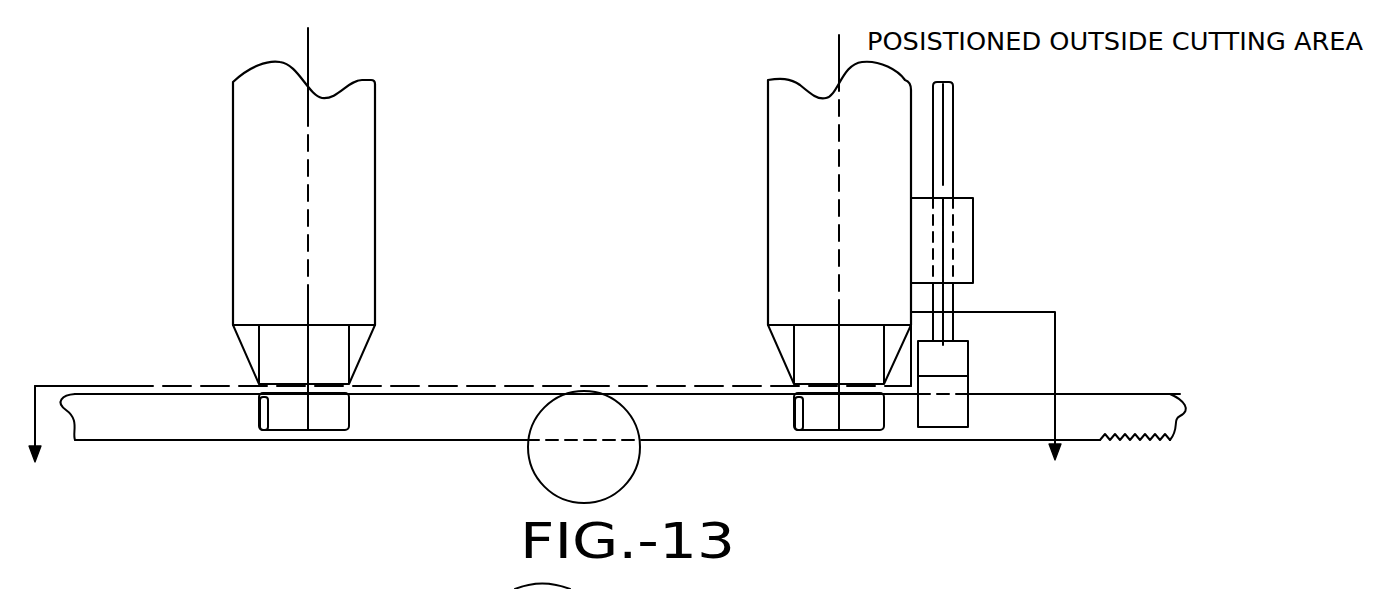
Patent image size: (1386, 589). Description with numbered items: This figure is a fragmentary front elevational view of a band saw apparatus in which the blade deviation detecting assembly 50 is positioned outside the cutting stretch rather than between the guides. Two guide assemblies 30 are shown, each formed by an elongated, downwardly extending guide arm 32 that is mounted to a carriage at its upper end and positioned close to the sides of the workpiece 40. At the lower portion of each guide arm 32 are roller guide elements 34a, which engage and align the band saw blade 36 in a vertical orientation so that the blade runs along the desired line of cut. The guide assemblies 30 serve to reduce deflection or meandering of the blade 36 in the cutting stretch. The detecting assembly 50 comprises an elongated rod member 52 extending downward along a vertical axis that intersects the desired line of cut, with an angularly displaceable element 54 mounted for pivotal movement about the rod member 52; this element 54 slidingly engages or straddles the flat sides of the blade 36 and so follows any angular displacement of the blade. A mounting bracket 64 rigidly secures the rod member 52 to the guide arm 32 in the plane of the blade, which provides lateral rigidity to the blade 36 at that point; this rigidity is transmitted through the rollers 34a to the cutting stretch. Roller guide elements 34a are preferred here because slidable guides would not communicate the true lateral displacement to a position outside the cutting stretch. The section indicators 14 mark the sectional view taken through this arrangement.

The section line 14- 14 is at (546, 401).
The guide assembly 30 is at (528, 229).
The guide arm 32 is at (233, 200).
The roller guide element 34a is at (283, 418).
The band saw blade 36 is at (397, 440).
The workpiece 40 is at (535, 472).
The blade deviation detection assembly 50 is at (1016, 209).
The rod member 52 is at (953, 190).
The angularly displaceable element 54 is at (955, 368).
The mounting bracket 64 is at (973, 256).